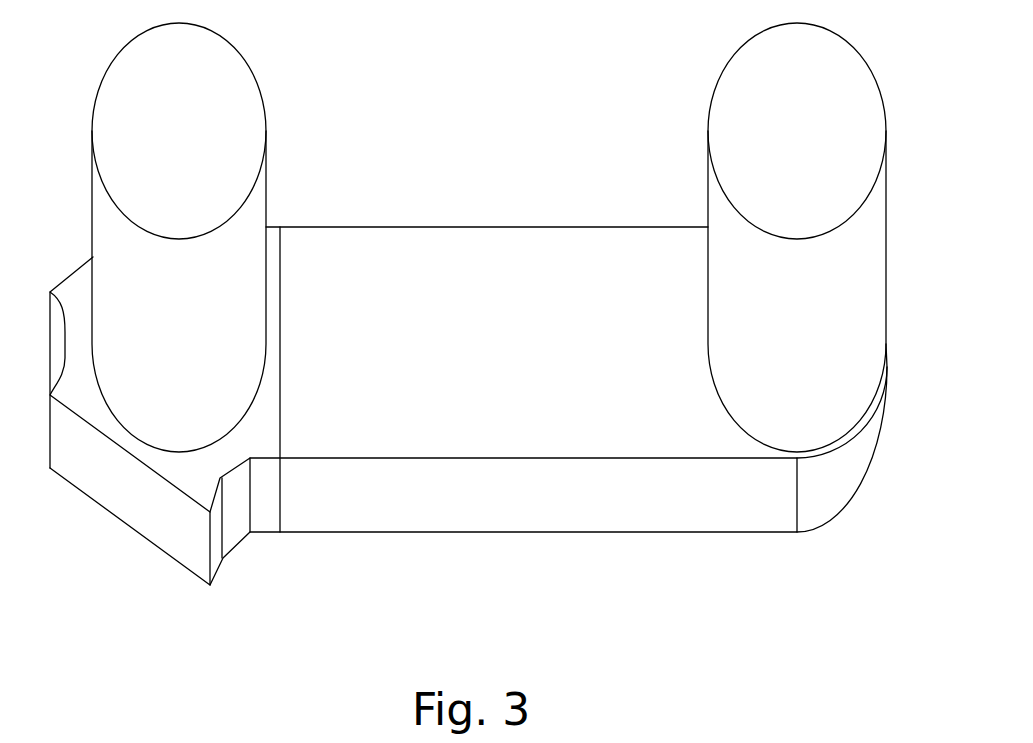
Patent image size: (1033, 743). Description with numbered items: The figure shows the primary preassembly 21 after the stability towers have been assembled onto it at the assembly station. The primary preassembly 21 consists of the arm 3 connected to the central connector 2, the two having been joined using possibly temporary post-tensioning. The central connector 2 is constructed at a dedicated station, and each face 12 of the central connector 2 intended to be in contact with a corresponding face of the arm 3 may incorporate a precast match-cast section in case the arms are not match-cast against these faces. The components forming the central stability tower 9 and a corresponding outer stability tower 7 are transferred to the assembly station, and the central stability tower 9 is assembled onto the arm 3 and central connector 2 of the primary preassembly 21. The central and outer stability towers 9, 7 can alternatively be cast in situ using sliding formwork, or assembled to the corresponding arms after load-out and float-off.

The primary preassembly 21 is at (562, 128).
The central connector 2 is at (85, 408).
The arm 3 is at (448, 257).
The outer stability tower 7 is at (867, 248).
The central stability tower 9 is at (98, 227).
The face 12 is at (155, 527).